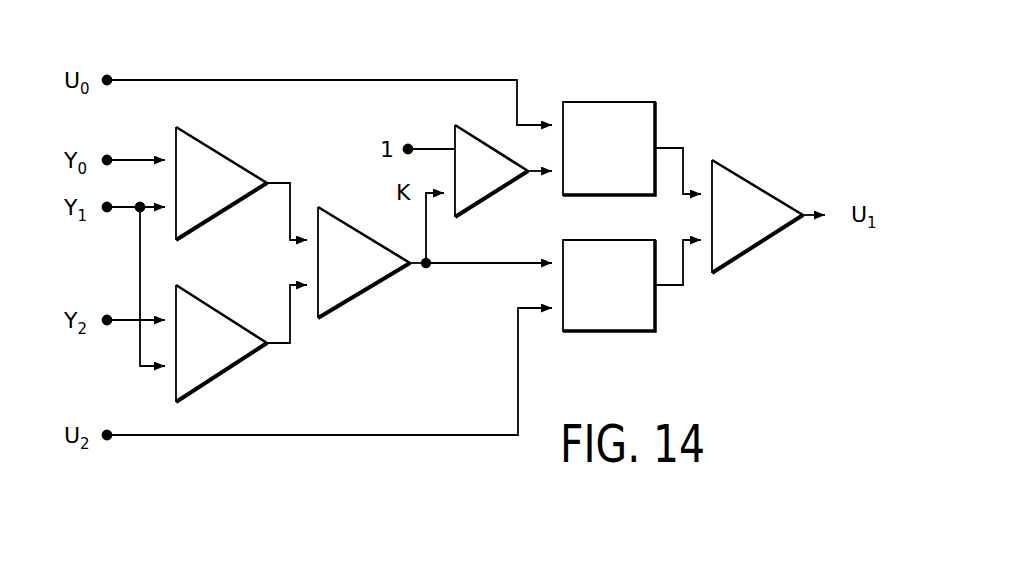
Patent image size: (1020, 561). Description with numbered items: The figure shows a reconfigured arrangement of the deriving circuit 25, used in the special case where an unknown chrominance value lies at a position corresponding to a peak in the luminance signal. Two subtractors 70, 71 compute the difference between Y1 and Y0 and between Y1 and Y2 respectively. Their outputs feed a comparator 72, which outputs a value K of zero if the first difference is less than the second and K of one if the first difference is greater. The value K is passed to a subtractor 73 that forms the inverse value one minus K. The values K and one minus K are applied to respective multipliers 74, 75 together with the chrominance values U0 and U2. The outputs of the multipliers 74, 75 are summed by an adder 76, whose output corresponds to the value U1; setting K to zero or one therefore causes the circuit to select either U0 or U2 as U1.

The deriving circuit 25 is at (363, 452).
The subtractor 70 is at (242, 163).
The subtractor 71 is at (243, 362).
The comparator 72 is at (385, 283).
The subtractor 73 is at (502, 193).
The multiplier 74 is at (623, 102).
The multiplier 75 is at (622, 331).
The adder 76 is at (772, 237).